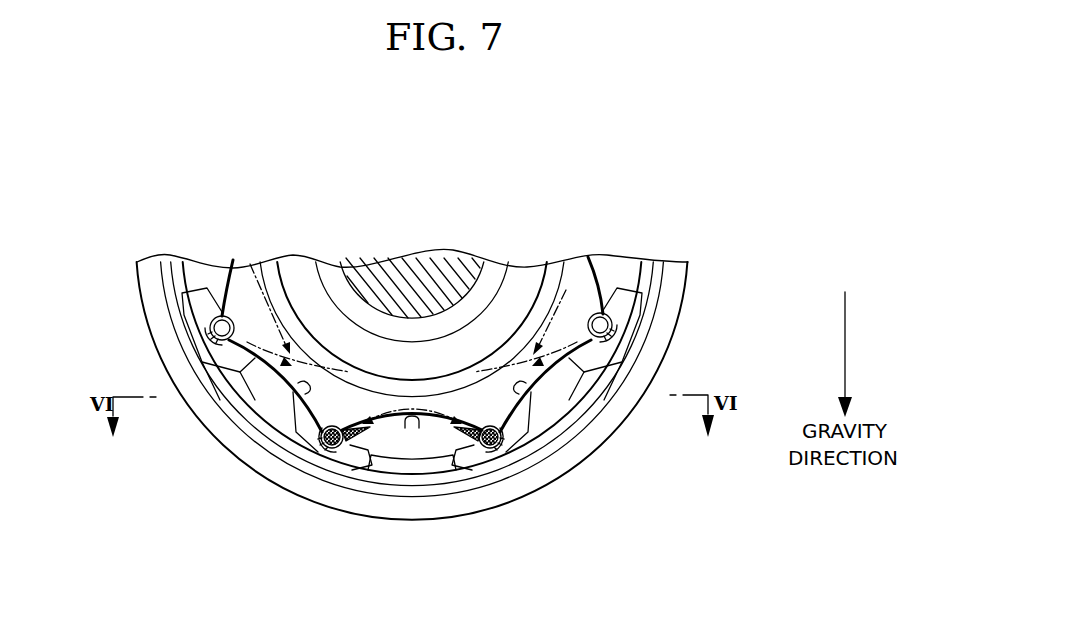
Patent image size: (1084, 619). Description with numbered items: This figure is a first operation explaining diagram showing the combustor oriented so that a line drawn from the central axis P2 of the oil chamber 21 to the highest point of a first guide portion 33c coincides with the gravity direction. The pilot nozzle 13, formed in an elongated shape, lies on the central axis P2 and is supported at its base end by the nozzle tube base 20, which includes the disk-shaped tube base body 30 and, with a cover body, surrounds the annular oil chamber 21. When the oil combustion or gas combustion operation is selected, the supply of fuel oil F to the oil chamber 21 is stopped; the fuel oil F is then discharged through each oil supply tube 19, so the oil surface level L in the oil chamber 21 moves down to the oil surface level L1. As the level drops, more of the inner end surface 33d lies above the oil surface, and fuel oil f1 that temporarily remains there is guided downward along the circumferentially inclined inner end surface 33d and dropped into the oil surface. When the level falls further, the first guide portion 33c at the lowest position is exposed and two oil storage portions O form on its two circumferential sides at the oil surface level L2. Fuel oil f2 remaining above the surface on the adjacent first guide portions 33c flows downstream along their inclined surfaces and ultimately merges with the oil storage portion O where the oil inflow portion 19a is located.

The nozzle tube base 20 is at (743, 128).
The tube base body 30 is at (150, 256).
The pilot nozzle 13 is at (436, 268).
The central axis P2 is at (405, 248).
The inner end surface 33d is at (263, 266).
The oil chamber 21 is at (580, 281).
The fuel oil f1 is at (252, 287).
The fuel oil f2 is at (260, 350).
The oil inflow portion 19a is at (612, 300).
The oil supply tube 19 is at (420, 450).
The first guide portion 33c is at (300, 392).
The oil storage portion O is at (343, 448).
The fuel oil F is at (421, 573).
The oil surface level L is at (560, 407).
The oil surface level L1 is at (640, 407).
The oil surface level L2 is at (498, 450).